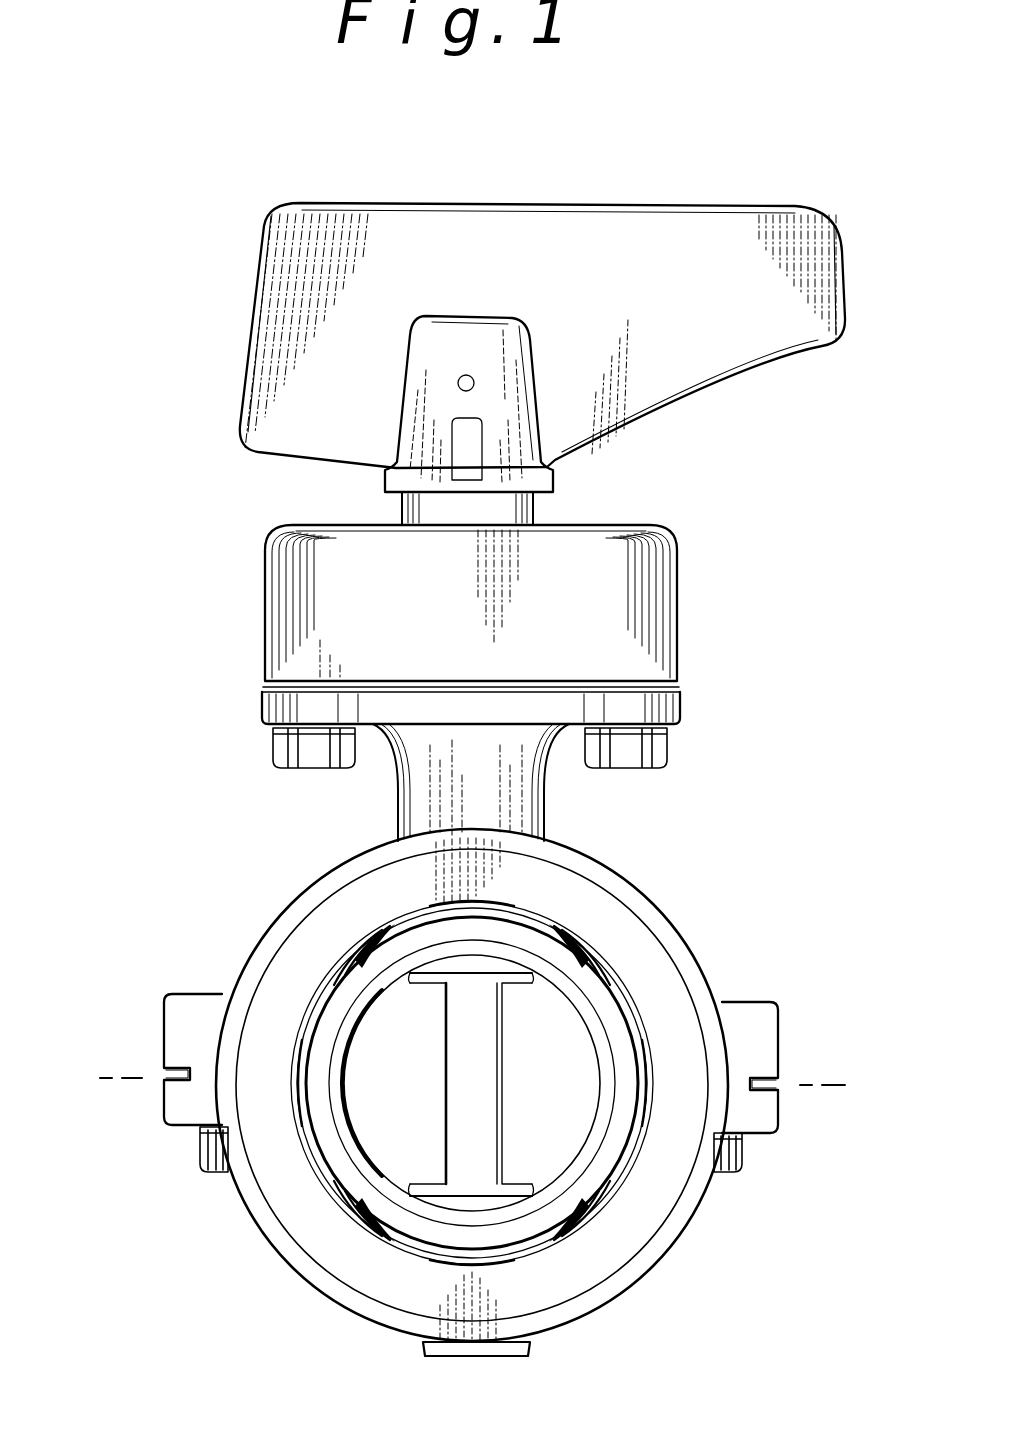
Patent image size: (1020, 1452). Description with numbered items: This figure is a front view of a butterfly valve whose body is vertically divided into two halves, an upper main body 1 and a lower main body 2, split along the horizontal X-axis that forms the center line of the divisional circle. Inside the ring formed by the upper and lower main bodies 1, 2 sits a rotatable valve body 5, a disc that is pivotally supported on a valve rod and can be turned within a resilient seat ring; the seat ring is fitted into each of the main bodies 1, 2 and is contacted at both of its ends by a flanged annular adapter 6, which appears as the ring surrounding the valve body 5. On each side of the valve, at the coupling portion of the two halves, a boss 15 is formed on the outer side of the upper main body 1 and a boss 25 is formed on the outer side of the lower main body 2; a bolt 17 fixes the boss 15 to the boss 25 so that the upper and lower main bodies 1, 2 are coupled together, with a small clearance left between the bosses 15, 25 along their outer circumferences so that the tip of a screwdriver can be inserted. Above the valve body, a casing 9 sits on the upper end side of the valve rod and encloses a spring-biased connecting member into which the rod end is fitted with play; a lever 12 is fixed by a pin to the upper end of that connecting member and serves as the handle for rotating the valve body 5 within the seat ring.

The upper main body 1 is at (640, 887).
The lower main body 2 is at (664, 1261).
The valve body 5 is at (385, 1018).
The flanged annular adapter 6 is at (603, 948).
The casing 9 is at (670, 559).
The lever 12 is at (787, 209).
The boss 15 is at (197, 1004).
The bolt 17 is at (213, 1174).
The boss 25 is at (168, 1116).